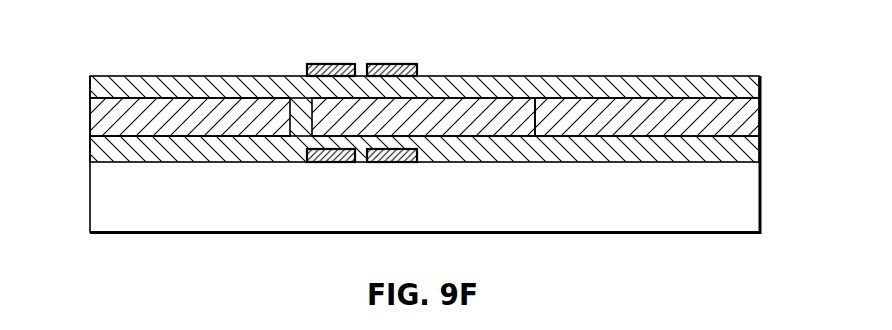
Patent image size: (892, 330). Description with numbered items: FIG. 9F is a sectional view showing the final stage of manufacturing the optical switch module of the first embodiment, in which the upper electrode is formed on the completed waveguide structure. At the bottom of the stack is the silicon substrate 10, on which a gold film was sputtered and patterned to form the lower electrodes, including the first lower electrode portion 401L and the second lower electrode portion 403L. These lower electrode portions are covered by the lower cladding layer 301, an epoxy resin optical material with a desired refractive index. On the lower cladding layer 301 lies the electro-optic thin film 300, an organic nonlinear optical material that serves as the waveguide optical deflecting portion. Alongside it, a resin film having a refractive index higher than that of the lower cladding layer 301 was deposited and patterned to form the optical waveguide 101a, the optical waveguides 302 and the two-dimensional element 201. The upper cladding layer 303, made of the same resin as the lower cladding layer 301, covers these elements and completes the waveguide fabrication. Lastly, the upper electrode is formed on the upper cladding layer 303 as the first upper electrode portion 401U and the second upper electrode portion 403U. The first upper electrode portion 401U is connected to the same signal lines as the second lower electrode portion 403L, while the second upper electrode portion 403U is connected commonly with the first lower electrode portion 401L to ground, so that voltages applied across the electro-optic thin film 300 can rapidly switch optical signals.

The silicon substrate 10 is at (750, 205).
The optical waveguide 101a is at (125, 105).
The two-dimensional element 201 is at (273, 107).
The electro-optic thin film 300 is at (495, 110).
The lower cladding layer 301 is at (750, 147).
The optical waveguides 302 is at (750, 128).
The upper cladding layer 303 is at (732, 85).
The first upper electrode portion 401U is at (330, 65).
The second upper electrode portion 403U is at (390, 65).
The first lower electrode portion 401L is at (333, 163).
The second lower electrode portion 403L is at (392, 163).